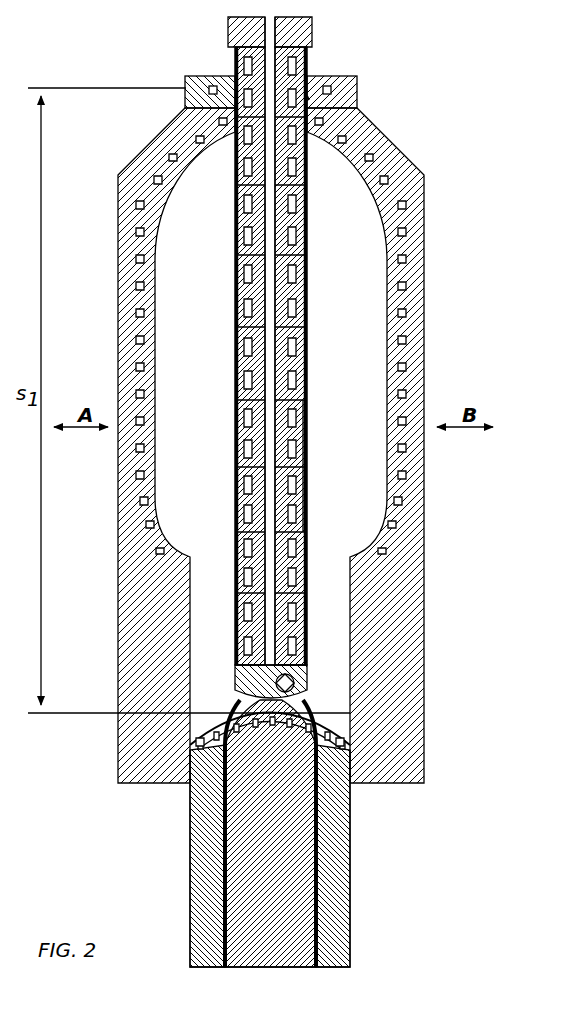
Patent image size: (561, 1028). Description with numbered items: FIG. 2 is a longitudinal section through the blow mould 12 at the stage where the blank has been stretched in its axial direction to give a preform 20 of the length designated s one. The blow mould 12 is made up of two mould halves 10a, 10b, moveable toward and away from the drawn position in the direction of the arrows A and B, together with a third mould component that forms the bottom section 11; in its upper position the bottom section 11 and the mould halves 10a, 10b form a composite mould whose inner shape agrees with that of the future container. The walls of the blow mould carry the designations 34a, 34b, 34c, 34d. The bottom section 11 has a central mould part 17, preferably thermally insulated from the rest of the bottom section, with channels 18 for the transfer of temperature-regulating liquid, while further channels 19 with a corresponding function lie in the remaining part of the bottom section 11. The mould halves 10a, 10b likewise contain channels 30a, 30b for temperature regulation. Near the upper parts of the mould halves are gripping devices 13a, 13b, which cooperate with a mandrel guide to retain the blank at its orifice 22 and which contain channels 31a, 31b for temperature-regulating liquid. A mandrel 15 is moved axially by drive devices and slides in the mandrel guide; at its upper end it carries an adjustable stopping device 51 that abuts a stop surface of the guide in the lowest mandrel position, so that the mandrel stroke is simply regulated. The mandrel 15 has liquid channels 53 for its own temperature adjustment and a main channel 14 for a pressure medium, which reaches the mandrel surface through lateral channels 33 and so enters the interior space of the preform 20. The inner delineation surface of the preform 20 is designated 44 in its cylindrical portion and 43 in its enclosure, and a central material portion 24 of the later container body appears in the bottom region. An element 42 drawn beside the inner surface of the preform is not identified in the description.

The mould half 10a is at (124, 354).
The mould half 10b is at (417, 362).
The bottom section 11 is at (340, 860).
The blow mould 12 is at (440, 242).
The gripping device 13a is at (187, 79).
The gripping device 13b is at (357, 105).
The main channel 14 is at (272, 70).
The mandrel 15 is at (308, 230).
The central mould part 17 is at (300, 814).
The channels 18 is at (226, 787).
The channels 19 is at (210, 718).
The preform 20 is at (308, 304).
The orifice 22 is at (309, 98).
The central material portion 24 is at (292, 706).
The channels 30a is at (168, 156).
The channels 30b is at (400, 178).
The channels 31a is at (216, 86).
The channels 31b is at (332, 88).
The lateral channels 33 is at (236, 258).
The wall of the blow mould 34a is at (135, 322).
The wall of the blow mould 34b is at (412, 280).
The wall of the blow mould 34c is at (198, 742).
The wall of the blow mould 34d is at (342, 742).
The segment 42 is at (308, 470).
The inner delineation surface 43 is at (303, 676).
The inner delineation surface 44 is at (308, 432).
The adjustable stopping device 51 is at (308, 36).
The liquid channels 53 is at (248, 482).